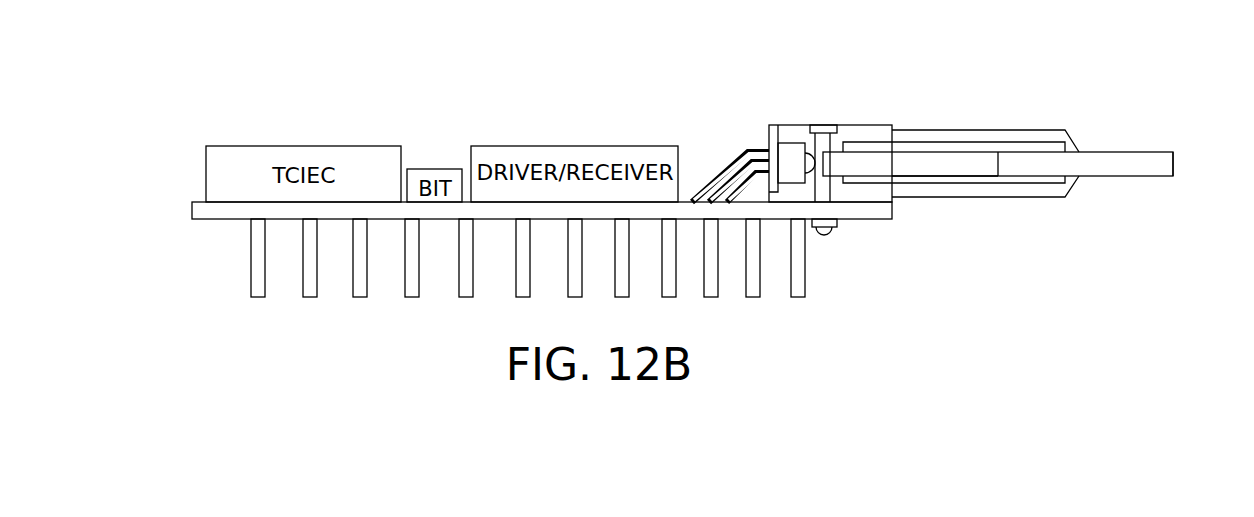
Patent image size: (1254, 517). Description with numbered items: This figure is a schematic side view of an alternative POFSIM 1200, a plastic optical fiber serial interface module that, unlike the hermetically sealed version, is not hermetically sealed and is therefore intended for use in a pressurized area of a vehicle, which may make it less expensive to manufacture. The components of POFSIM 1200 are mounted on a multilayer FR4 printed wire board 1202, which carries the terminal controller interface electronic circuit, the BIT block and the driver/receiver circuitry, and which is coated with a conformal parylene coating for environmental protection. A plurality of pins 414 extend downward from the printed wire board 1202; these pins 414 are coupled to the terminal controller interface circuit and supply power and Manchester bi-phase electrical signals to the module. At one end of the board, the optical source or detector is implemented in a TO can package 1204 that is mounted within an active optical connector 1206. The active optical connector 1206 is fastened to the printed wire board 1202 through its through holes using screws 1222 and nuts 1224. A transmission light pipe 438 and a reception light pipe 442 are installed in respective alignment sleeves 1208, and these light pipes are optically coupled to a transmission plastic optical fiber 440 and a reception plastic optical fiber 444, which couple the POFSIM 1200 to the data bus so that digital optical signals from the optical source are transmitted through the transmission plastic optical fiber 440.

The POFSIM 1200 is at (872, 80).
The printed wire board 1202 is at (200, 209).
The TO can package 1204 is at (787, 152).
The active optical connector 1206 is at (877, 125).
The alignment sleeve 1208 is at (1057, 148).
The pins 414 is at (250, 289).
The transmission light pipe 438 is at (930, 170).
The transmission plastic optical fiber 440 is at (1165, 158).
The reception light pipe 442 is at (992, 172).
The reception plastic optical fiber 444 is at (1165, 178).
The screw 1222 is at (817, 185).
The nut 1224 is at (833, 235).